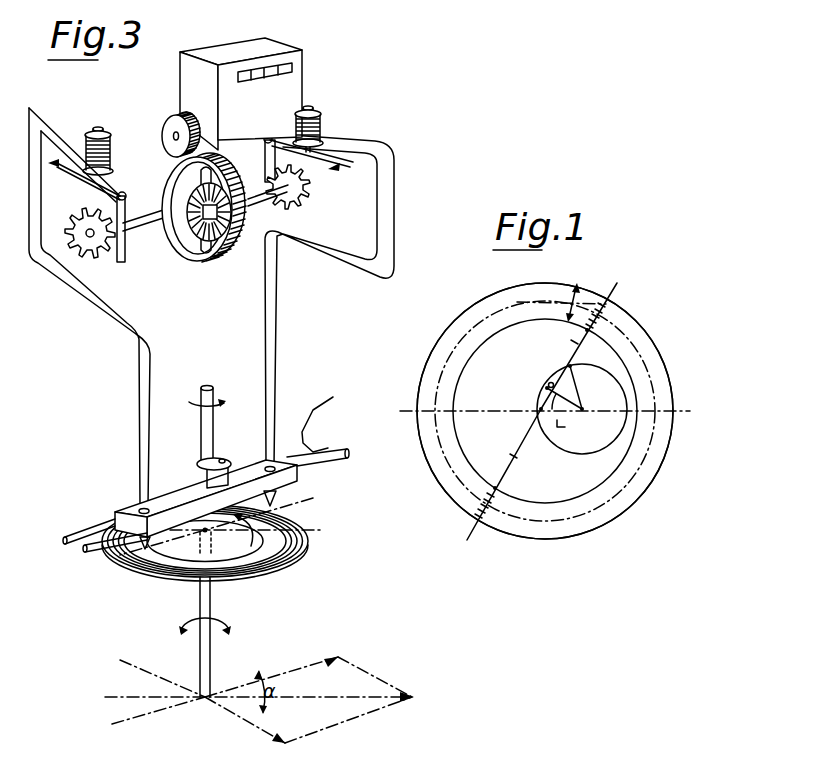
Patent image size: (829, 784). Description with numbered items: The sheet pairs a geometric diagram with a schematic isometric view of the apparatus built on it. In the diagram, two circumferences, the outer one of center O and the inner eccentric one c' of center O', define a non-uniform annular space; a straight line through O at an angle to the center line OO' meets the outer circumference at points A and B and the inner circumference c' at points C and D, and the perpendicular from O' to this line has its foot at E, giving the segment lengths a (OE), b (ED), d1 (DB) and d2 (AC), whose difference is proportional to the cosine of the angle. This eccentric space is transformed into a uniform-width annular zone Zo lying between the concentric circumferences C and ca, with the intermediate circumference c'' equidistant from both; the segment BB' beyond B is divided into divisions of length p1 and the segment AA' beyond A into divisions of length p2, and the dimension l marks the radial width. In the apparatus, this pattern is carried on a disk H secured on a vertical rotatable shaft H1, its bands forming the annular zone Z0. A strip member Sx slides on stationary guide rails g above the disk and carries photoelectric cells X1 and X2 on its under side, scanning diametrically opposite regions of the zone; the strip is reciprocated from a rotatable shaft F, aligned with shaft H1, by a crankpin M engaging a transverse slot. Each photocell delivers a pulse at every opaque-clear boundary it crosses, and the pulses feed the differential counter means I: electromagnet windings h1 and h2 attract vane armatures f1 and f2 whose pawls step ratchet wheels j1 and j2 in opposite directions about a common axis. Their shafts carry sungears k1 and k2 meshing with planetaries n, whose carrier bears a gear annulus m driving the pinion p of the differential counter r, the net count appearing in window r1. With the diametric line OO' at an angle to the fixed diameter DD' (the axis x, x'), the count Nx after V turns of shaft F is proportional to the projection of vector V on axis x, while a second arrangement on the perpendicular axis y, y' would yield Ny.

In FIG. 3, the differential counter means I is at (171, 89).
In FIG. 3, the differential counter r is at (228, 52).
In FIG. 1, the differential counter r is at (581, 387).
In FIG. 3, the window r1 is at (296, 67).
In FIG. 3, the electromagnet winding h1 is at (318, 126).
In FIG. 3, the electromagnet winding h2 is at (97, 158).
In FIG. 3, the vane armature f1 is at (330, 160).
In FIG. 3, the vane armature f2 is at (80, 170).
In FIG. 3, the ratchet wheel j1 is at (294, 200).
In FIG. 3, the ratchet wheel j2 is at (82, 250).
In FIG. 3, the pinion p is at (168, 128).
In FIG. 3, the gear annulus m is at (243, 255).
In FIG. 3, the planetaries n is at (204, 258).
In FIG. 3, the sungear k1 is at (186, 228).
In FIG. 3, the sungear k2 is at (222, 208).
In FIG. 3, the rotatable shaft F is at (210, 390).
In FIG. 3, the crankpin M is at (232, 460).
In FIG. 3, the strip member Sx is at (177, 498).
In FIG. 3, the guide rails g is at (317, 413).
In FIG. 3, the photoelectric cell element X1 is at (300, 486).
In FIG. 3, the photoelectric cell element X2 is at (103, 560).
In FIG. 3, the disk H is at (268, 552).
In FIG. 3, the annular zone Z0 is at (300, 555).
In FIG. 3, the rotatable shaft H1 is at (200, 590).
In FIG. 3, the center O is at (214, 521).
In FIG. 1, the center O is at (542, 418).
In FIG. 3, the center O' is at (263, 531).
In FIG. 1, the center O' is at (591, 418).
In FIG. 3, the point D is at (266, 509).
In FIG. 1, the point D is at (562, 356).
In FIG. 3, the point D' is at (153, 558).
In FIG. 3, the vector length V is at (259, 688).
In FIG. 3, the coordinate axis x is at (279, 667).
In FIG. 3, the negative direction of axis x x' is at (157, 717).
In FIG. 3, the coordinate axis y is at (250, 734).
In FIG. 3, the negative direction of axis y y' is at (162, 672).
In FIG. 3, the pulse count Nx is at (313, 658).
In FIG. 3, the pulse count Ny is at (257, 733).
In FIG. 1, the circumference ca is at (433, 343).
In FIG. 1, the annular zone Zo is at (604, 506).
In FIG. 1, the intermediate circumference c'' is at (545, 390).
In FIG. 1, the point C is at (491, 331).
In FIG. 1, the circumference c' is at (582, 423).
In FIG. 1, the point B is at (591, 342).
In FIG. 1, the point B' is at (589, 343).
In FIG. 1, the point A is at (505, 482).
In FIG. 1, the point A' is at (504, 477).
In FIG. 1, the division length p1 is at (606, 320).
In FIG. 1, the division length p2 is at (496, 510).
In FIG. 1, the segment length d1 is at (575, 341).
In FIG. 1, the segment length d2 is at (510, 461).
In FIG. 1, the length l is at (561, 302).
In FIG. 1, the segment length a is at (553, 396).
In FIG. 1, the segment length b is at (552, 379).
In FIG. 1, the angle e is at (562, 399).
In FIG. 1, the point E is at (550, 384).